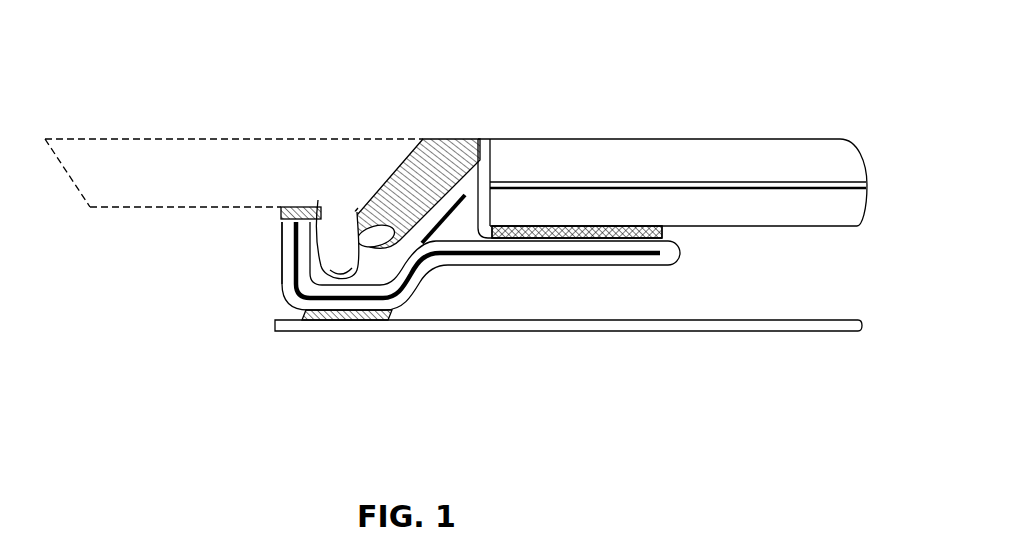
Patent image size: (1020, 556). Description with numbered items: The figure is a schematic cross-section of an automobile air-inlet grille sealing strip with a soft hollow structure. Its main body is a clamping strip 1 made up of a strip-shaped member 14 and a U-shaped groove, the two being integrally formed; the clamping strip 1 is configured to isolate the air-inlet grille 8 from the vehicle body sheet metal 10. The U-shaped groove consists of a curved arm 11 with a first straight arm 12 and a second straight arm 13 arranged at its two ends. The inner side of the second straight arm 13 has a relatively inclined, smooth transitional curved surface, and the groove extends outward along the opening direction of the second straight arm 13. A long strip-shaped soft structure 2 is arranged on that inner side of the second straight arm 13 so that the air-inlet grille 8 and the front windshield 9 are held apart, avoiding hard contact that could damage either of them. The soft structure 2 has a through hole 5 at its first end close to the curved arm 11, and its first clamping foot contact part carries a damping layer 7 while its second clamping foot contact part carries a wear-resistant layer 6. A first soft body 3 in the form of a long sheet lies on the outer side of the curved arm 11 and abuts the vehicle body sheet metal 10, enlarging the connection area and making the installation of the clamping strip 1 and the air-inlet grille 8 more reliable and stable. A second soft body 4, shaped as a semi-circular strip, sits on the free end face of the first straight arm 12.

The clamping strip 1 is at (283, 287).
The soft structure 2 is at (460, 139).
The first soft body 3 is at (322, 310).
The second soft body 4 is at (292, 207).
The through hole 5 is at (380, 225).
The wear-resistant layer 6 is at (355, 218).
The damping layer 7 is at (363, 253).
The air-inlet grille 8 is at (158, 165).
The front windshield 9 is at (606, 165).
The vehicle body sheet metal 10 is at (713, 323).
The curved arm 11 is at (343, 303).
The first straight arm 12 is at (282, 245).
The second straight arm 13 is at (384, 236).
The strip-shaped member 14 is at (600, 260).